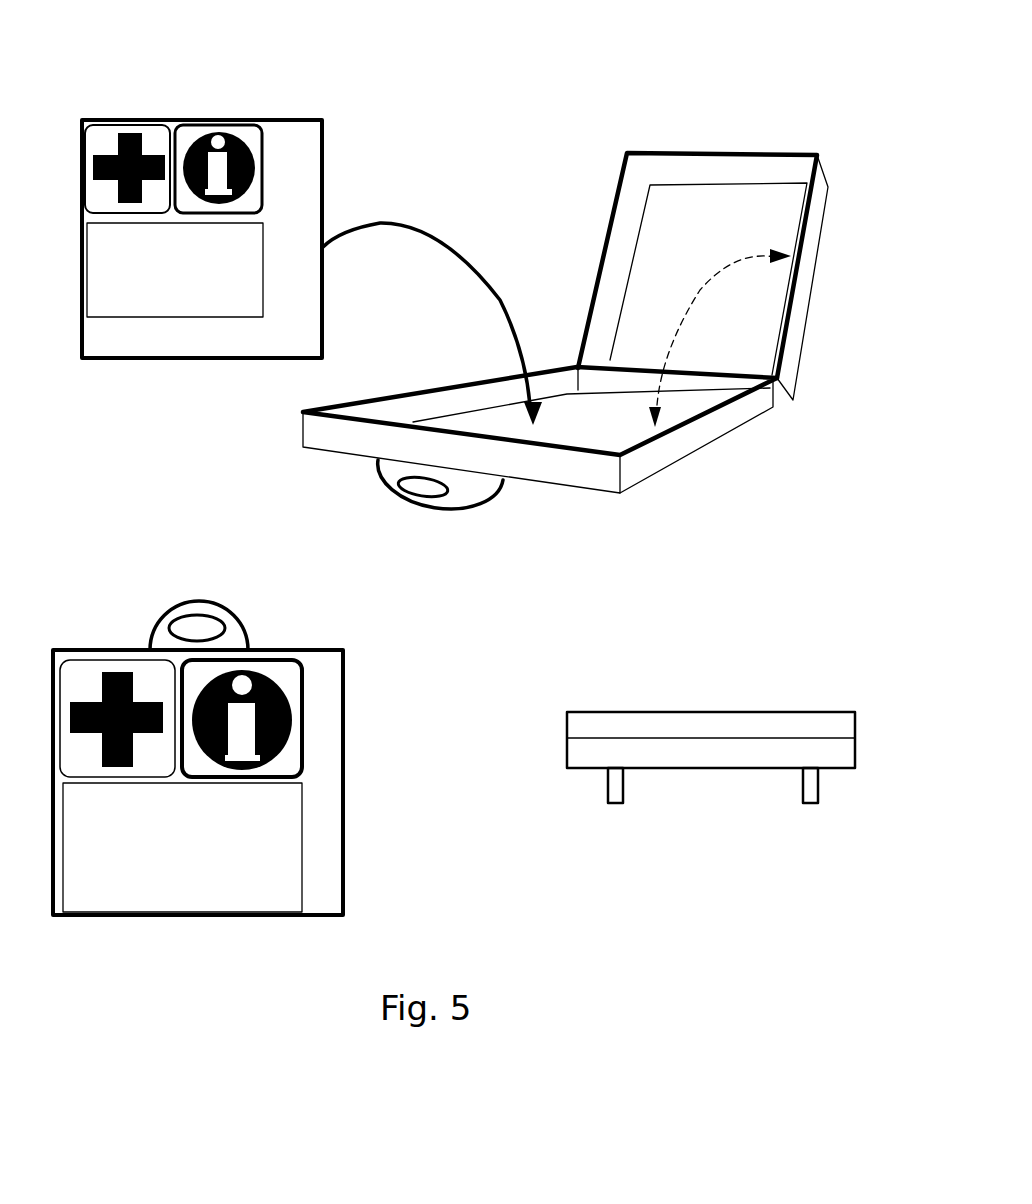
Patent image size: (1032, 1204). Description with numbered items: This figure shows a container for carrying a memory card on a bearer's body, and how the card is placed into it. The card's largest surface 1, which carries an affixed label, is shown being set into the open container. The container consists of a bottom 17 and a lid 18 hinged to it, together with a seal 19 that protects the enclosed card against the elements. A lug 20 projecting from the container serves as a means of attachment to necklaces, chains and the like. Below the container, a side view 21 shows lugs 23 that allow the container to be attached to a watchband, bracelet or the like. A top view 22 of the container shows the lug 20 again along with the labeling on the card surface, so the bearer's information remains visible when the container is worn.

The largest surface of the card 1 is at (303, 153).
The bottom 17 is at (593, 472).
The lid 18 is at (825, 728).
The seal 19 is at (437, 380).
The lug 20 is at (387, 480).
The side view 21 is at (590, 750).
The top view 22 is at (318, 870).
The lugs 23 is at (625, 800).